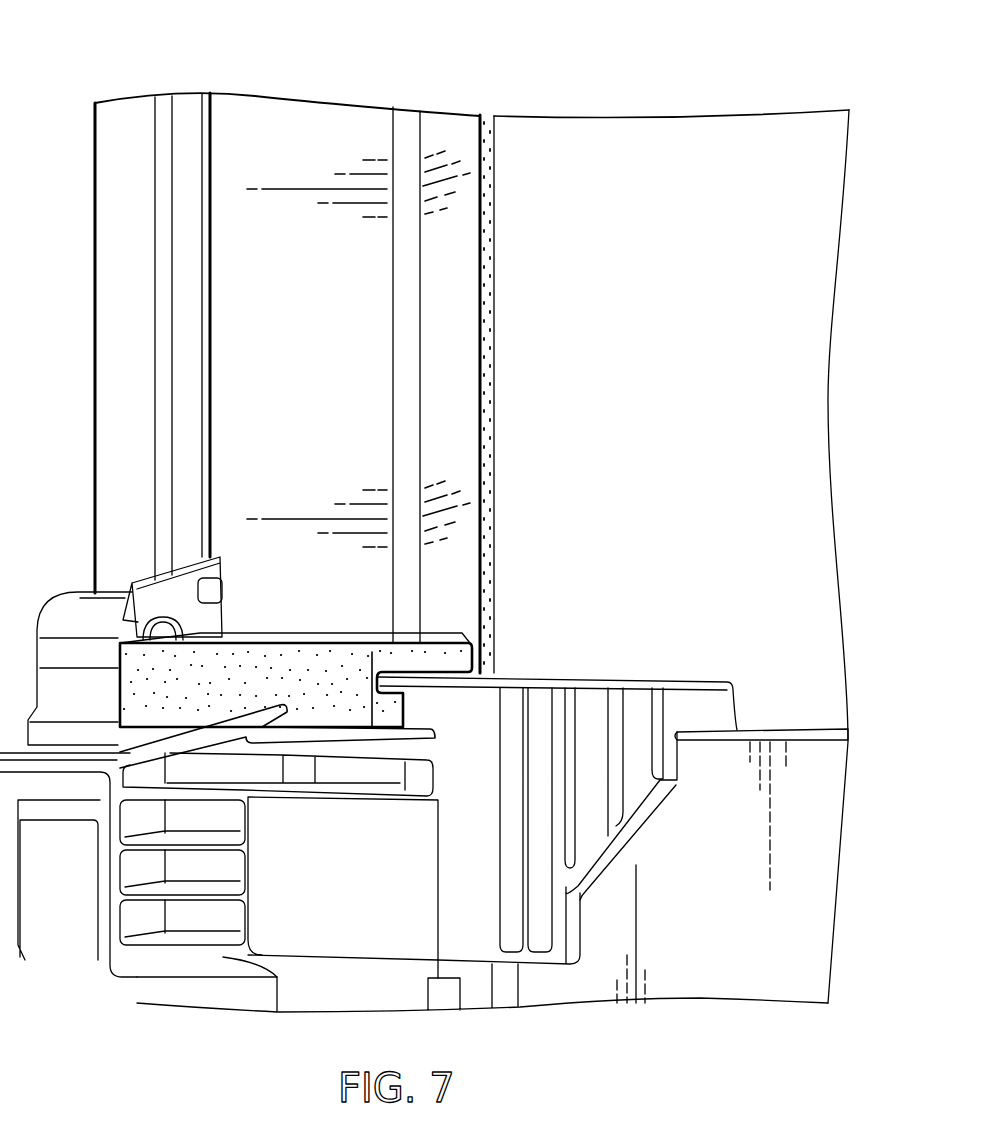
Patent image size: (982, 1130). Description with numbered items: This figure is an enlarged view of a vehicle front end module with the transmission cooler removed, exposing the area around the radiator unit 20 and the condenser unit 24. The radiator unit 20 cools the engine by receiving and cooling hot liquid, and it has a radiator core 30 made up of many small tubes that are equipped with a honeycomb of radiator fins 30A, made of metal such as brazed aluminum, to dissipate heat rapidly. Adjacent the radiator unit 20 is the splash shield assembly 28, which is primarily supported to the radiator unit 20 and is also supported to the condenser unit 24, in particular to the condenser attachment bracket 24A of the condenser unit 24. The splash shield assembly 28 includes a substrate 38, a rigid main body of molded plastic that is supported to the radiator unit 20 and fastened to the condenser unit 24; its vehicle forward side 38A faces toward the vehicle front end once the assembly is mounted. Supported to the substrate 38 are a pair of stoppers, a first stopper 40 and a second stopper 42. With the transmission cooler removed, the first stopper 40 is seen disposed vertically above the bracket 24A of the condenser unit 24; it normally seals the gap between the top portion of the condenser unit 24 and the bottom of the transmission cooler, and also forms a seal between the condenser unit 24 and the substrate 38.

The radiator unit 20 is at (614, 48).
The condenser unit 24 is at (733, 736).
The condenser attachment bracket 24A is at (593, 855).
The splash shield assembly 28 is at (90, 150).
The radiator core 30 is at (697, 110).
The radiator fins 30A is at (745, 340).
The substrate 38 is at (298, 127).
The vehicle forward side 38A is at (267, 325).
The first stopper 40 is at (160, 688).
The second stopper 42 is at (488, 408).